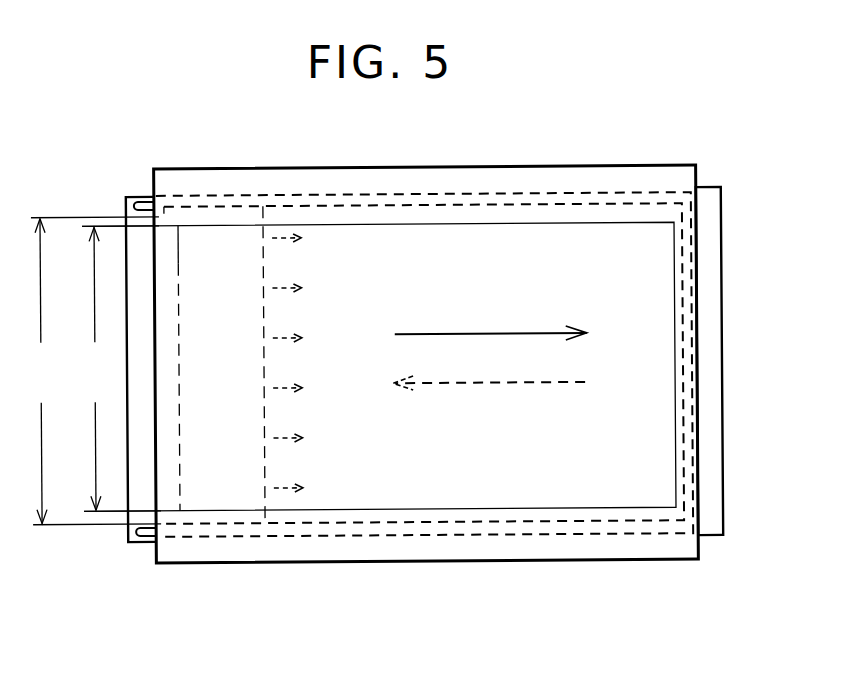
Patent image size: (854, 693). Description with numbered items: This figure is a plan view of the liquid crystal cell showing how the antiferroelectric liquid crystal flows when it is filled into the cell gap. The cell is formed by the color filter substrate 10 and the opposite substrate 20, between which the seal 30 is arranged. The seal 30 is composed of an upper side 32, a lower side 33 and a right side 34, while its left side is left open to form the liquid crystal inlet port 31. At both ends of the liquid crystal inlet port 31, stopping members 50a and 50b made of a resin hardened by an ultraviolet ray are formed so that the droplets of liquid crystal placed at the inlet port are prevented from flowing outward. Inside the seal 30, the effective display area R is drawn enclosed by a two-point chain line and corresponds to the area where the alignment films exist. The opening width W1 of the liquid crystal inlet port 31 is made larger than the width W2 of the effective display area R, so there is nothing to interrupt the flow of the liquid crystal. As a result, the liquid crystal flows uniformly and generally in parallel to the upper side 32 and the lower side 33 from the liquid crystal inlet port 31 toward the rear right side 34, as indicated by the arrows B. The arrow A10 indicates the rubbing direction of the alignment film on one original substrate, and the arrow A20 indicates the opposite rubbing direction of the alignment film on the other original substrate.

The color filter substrate 10 is at (707, 541).
The opposite substrate 20 is at (610, 564).
The seal 30 is at (541, 537).
The liquid crystal inlet port 31 is at (163, 525).
The upper side 32 is at (497, 204).
The lower side 33 is at (392, 530).
The right side 34 is at (692, 330).
The stopping member 50a is at (146, 202).
The stopping member 50b is at (147, 536).
The effective display area R is at (503, 509).
The rubbing direction arrow A10 is at (483, 386).
The rubbing direction arrow A20 is at (476, 332).
The liquid crystal flow arrows B is at (285, 289).
The opening width W1 is at (95, 371).
The width of effective display area W2 is at (119, 369).